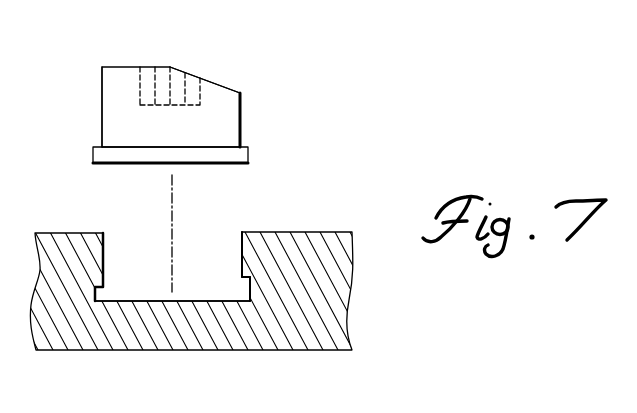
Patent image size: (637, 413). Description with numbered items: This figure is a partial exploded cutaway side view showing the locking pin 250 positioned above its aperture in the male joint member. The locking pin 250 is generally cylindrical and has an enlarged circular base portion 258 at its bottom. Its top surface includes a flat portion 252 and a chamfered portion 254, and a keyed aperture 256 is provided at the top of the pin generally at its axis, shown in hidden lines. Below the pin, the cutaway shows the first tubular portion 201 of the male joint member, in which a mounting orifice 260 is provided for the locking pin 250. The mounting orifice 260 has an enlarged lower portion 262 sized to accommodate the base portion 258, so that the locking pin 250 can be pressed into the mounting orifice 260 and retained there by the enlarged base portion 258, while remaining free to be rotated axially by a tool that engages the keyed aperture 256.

The first tubular portion 201 is at (338, 232).
The locking pin 250 is at (297, 115).
The flat portion 252 is at (120, 67).
The chamfered portion 254 is at (225, 88).
The keyed aperture 256 is at (178, 75).
The enlarged circular base portion 258 is at (243, 156).
The mounting orifice 260 is at (123, 258).
The enlarged lower portion 262 is at (244, 292).